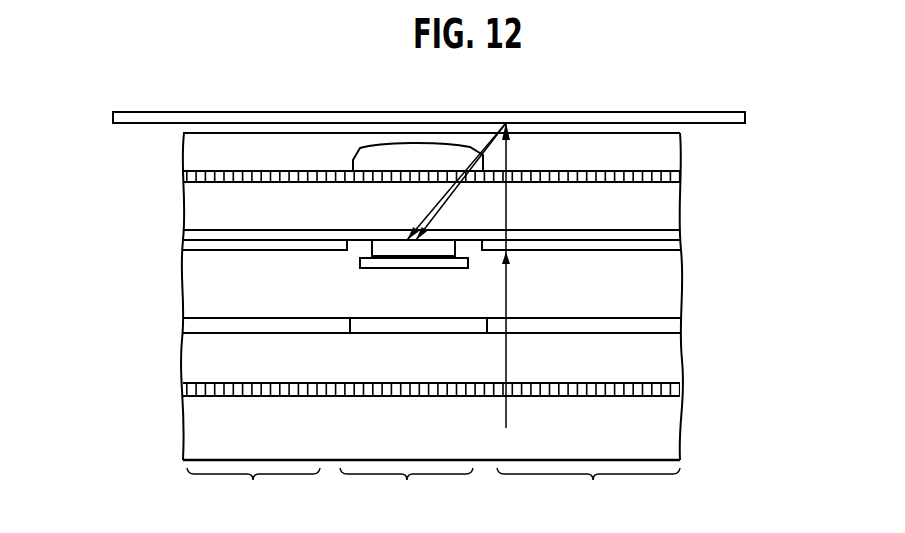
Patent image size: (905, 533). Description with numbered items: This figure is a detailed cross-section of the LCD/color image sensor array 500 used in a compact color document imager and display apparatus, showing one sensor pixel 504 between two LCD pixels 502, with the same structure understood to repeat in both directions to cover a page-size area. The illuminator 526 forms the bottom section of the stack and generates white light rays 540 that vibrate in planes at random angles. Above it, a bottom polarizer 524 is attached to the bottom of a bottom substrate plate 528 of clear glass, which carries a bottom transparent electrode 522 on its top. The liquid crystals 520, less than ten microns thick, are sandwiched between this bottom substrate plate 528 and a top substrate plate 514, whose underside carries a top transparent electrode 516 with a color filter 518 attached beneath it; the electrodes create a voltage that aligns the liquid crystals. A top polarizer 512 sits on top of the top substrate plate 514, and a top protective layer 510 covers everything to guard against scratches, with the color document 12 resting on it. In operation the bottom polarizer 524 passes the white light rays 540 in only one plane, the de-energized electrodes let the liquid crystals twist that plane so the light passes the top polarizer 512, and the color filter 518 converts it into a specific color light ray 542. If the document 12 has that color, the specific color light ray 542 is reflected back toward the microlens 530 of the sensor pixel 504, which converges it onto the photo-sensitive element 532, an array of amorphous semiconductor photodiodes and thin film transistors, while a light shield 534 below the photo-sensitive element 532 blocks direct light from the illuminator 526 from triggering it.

The color document 12 is at (621, 112).
The LCD/color image sensor array 500 is at (158, 205).
The LCD pixels 502 is at (433, 491).
The sensor pixel 504 is at (406, 491).
The top protective layer 510 is at (681, 151).
The top polarizer 512 is at (681, 180).
The top substrate plate 514 is at (681, 209).
The top transparent electrode 516 is at (681, 237).
The color filter 518 is at (681, 254).
The liquid crystals 520 is at (663, 292).
The bottom transparent electrode 522 is at (681, 326).
The bottom polarizer 524 is at (681, 391).
The illuminator 526 is at (681, 434).
The bottom substrate plate 528 is at (681, 363).
The microlens 530 is at (353, 158).
The photo-sensitive element 532 is at (357, 253).
The light shield 534 is at (365, 268).
The white light rays 540 is at (506, 413).
The specific color light ray 542 is at (507, 155).